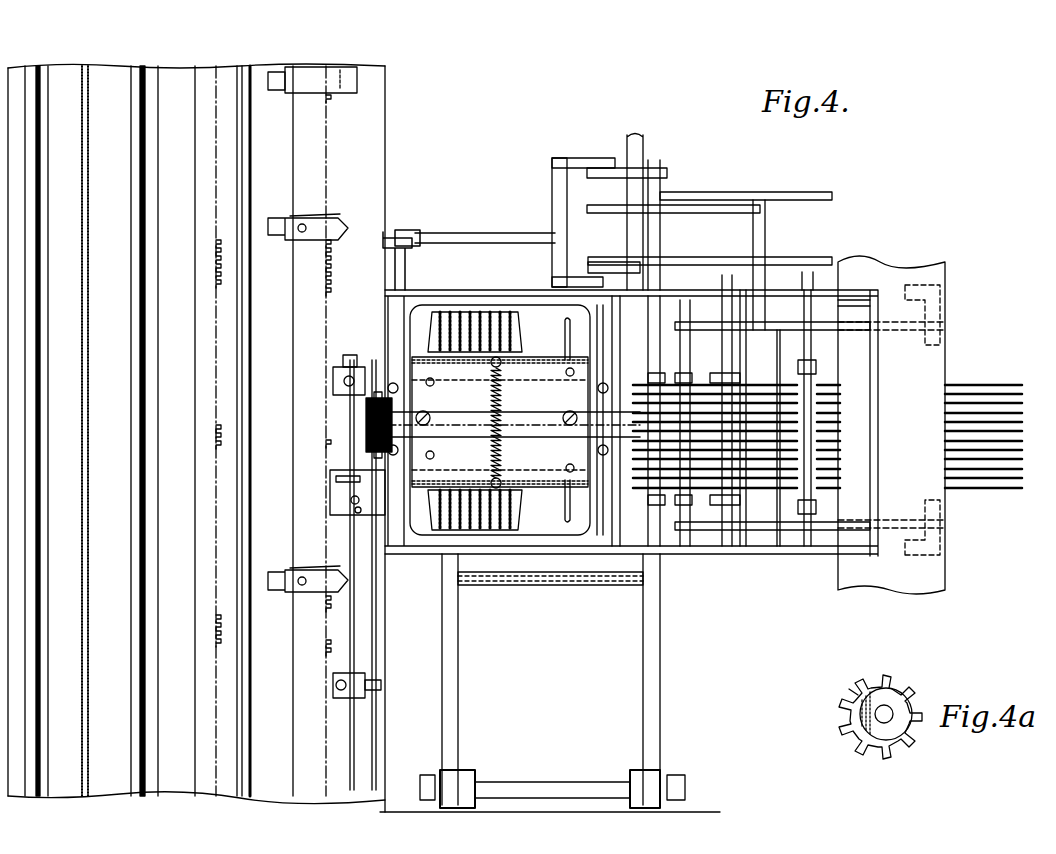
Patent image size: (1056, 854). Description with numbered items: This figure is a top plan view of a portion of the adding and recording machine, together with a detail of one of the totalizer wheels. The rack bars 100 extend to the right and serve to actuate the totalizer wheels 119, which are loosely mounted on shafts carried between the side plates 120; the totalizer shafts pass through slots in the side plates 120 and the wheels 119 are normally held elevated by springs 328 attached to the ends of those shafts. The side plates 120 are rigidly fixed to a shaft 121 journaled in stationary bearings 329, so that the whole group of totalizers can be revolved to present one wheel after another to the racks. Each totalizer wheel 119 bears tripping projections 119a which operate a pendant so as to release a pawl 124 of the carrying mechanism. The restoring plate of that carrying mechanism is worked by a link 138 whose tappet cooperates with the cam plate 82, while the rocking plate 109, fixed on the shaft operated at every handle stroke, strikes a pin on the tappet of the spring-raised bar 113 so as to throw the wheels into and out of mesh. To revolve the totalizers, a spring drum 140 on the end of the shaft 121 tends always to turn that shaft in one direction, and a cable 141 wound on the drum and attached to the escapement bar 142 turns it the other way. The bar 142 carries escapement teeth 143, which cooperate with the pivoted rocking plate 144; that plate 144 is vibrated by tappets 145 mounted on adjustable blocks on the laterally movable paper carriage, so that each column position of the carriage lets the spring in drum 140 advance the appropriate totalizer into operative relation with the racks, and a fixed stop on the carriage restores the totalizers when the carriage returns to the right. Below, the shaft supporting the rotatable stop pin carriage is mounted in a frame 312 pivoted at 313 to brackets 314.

In FIG. 4, the escapement teeth 143 is at (347, 93).
In FIG. 4, the tappets 145 is at (342, 228).
In FIG. 4, the spring drum 140 is at (368, 418).
In FIG. 4, the cable 141 is at (375, 580).
In FIG. 4, the pivoted rocking plate 144 is at (334, 472).
In FIG. 4, the escapement bar 142 is at (348, 659).
In FIG. 4, the totalizer wheels 119 is at (475, 366).
In FIG. 4a, the totalizer wheels 119 is at (840, 722).
In FIG. 4a, the tripping projections 119a is at (845, 690).
In FIG. 4, the side plates 120 is at (574, 421).
In FIG. 4, the pawl 124 is at (436, 312).
In FIG. 4, the shaft 121 is at (478, 414).
In FIG. 4, the springs 328 is at (500, 436).
In FIG. 4, the stationary bearings 329 is at (405, 402).
In FIG. 4, the link 138 is at (488, 233).
In FIG. 4, the bar 113 is at (580, 158).
In FIG. 4, the rocking plate 109 is at (808, 192).
In FIG. 4, the cam plate 82 is at (710, 247).
In FIG. 4, the rack bars 100 is at (970, 385).
In FIG. 4, the frame 312 is at (455, 680).
In FIG. 4, the pivot 313 is at (445, 788).
In FIG. 4, the brackets 314 is at (428, 775).